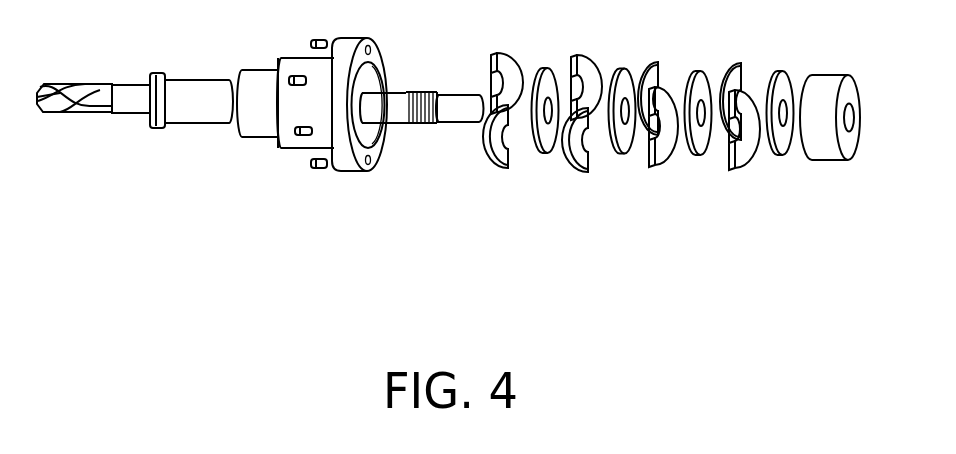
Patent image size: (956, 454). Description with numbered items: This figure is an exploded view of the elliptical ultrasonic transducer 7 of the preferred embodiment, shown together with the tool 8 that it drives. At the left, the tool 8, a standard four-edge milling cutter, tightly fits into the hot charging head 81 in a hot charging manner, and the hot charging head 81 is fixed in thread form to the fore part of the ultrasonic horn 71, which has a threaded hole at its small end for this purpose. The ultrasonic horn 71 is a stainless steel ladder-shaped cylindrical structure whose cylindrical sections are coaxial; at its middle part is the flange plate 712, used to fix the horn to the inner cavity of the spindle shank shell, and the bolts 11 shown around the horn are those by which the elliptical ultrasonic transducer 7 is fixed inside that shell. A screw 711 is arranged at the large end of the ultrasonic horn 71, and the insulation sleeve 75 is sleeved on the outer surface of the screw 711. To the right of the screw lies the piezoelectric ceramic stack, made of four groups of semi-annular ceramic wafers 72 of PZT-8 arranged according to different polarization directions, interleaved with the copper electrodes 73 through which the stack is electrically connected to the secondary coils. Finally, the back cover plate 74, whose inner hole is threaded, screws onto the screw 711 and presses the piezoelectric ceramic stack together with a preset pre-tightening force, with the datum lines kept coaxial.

The tool 8 is at (133, 103).
The hot charging head 81 is at (188, 107).
The ultrasonic horn 71 is at (253, 125).
The bolt 11 is at (305, 133).
The flange plate 712 is at (337, 127).
The screw 711 is at (392, 112).
The insulation sleeve 75 is at (452, 120).
The elliptical ultrasonic transducer 7 is at (470, 143).
The semi-annular ceramic wafer 72 is at (572, 162).
The copper electrode 73 is at (622, 140).
The back cover plate 74 is at (815, 145).